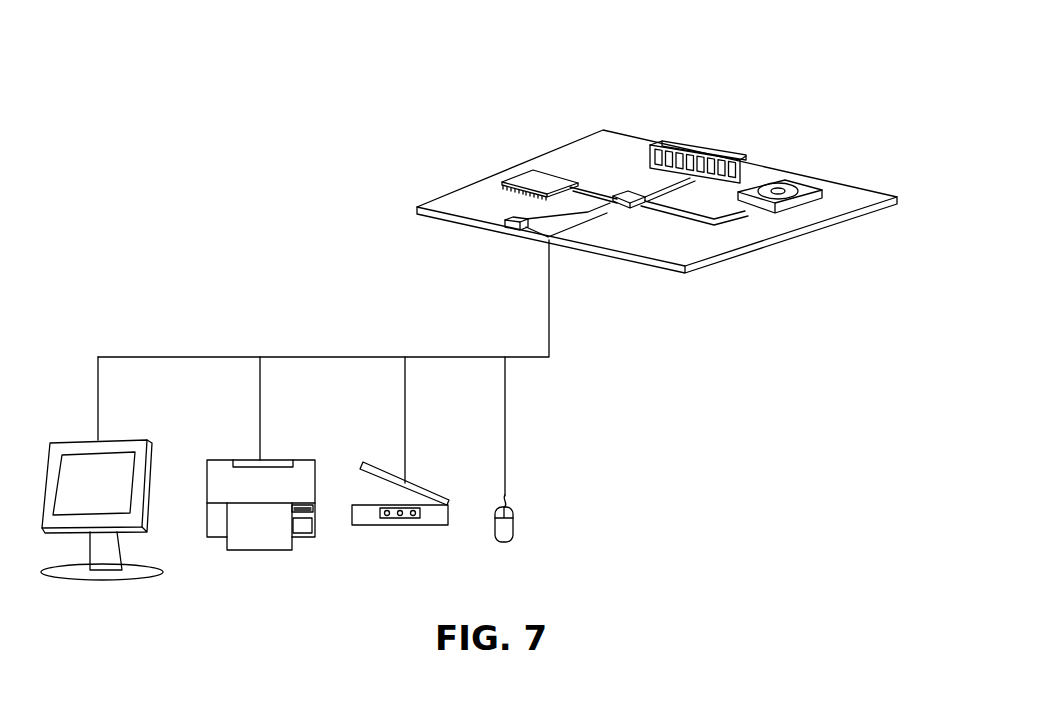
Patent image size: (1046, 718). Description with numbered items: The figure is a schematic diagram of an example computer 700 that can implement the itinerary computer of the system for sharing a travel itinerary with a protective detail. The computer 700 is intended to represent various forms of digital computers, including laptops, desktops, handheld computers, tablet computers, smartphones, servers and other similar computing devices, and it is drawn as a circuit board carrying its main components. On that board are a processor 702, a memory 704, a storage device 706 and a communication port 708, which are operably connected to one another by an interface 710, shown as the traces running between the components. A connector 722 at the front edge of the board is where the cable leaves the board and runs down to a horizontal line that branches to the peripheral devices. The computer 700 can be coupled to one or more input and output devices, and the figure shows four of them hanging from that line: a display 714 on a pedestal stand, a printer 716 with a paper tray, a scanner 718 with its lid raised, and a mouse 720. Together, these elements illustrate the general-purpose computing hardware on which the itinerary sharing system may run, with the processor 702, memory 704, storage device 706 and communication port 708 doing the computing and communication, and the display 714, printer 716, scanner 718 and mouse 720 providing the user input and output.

The computer 700 is at (770, 84).
The processor 702 is at (525, 181).
The memory 704 is at (683, 142).
The storage device 706 is at (797, 198).
The communication port 708 is at (630, 206).
The interface 710 is at (760, 218).
The display 714 is at (127, 580).
The printer 716 is at (260, 552).
The scanner 718 is at (430, 525).
The mouse 720 is at (515, 522).
The I/O connector 722 is at (511, 232).